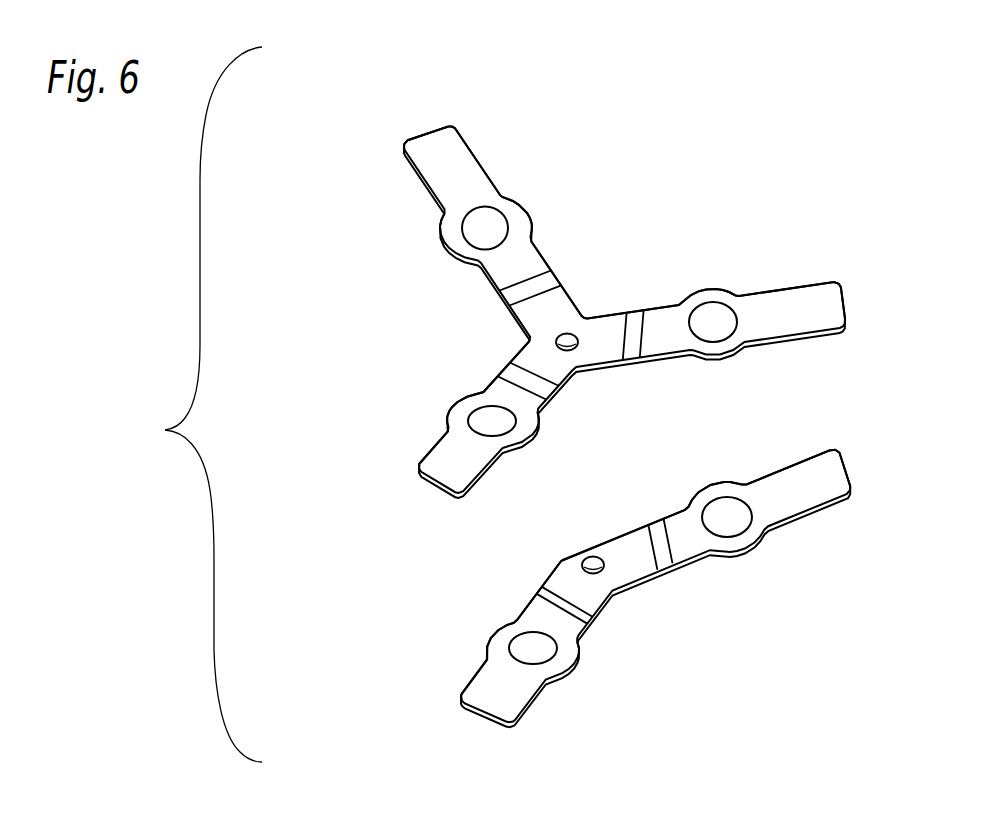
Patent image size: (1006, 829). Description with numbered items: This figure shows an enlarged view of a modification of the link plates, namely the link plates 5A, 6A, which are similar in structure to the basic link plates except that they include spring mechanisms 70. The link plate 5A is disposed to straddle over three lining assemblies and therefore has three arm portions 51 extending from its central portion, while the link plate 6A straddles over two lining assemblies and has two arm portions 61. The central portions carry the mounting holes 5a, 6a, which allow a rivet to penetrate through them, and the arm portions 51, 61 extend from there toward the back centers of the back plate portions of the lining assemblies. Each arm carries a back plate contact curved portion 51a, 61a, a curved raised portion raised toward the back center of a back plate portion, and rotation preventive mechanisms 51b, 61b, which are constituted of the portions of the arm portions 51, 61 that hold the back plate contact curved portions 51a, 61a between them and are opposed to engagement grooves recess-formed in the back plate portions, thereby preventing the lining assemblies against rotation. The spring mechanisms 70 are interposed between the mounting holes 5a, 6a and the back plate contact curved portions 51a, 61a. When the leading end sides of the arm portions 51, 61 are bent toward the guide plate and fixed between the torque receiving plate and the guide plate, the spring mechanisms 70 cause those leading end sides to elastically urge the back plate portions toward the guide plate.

The link plate 5A is at (392, 134).
The arm portion 51 is at (423, 126).
The back plate contact curved portion 51a is at (488, 226).
The rotation preventive mechanism 51b is at (461, 183).
The mounting hole 5a is at (557, 339).
The spring mechanism 70 is at (636, 312).
The link plate 6A is at (880, 476).
The arm portion 61 is at (823, 508).
The back plate contact curved portion 61a is at (723, 522).
The rotation preventive mechanism 61b is at (780, 486).
The mounting hole 6a is at (594, 560).